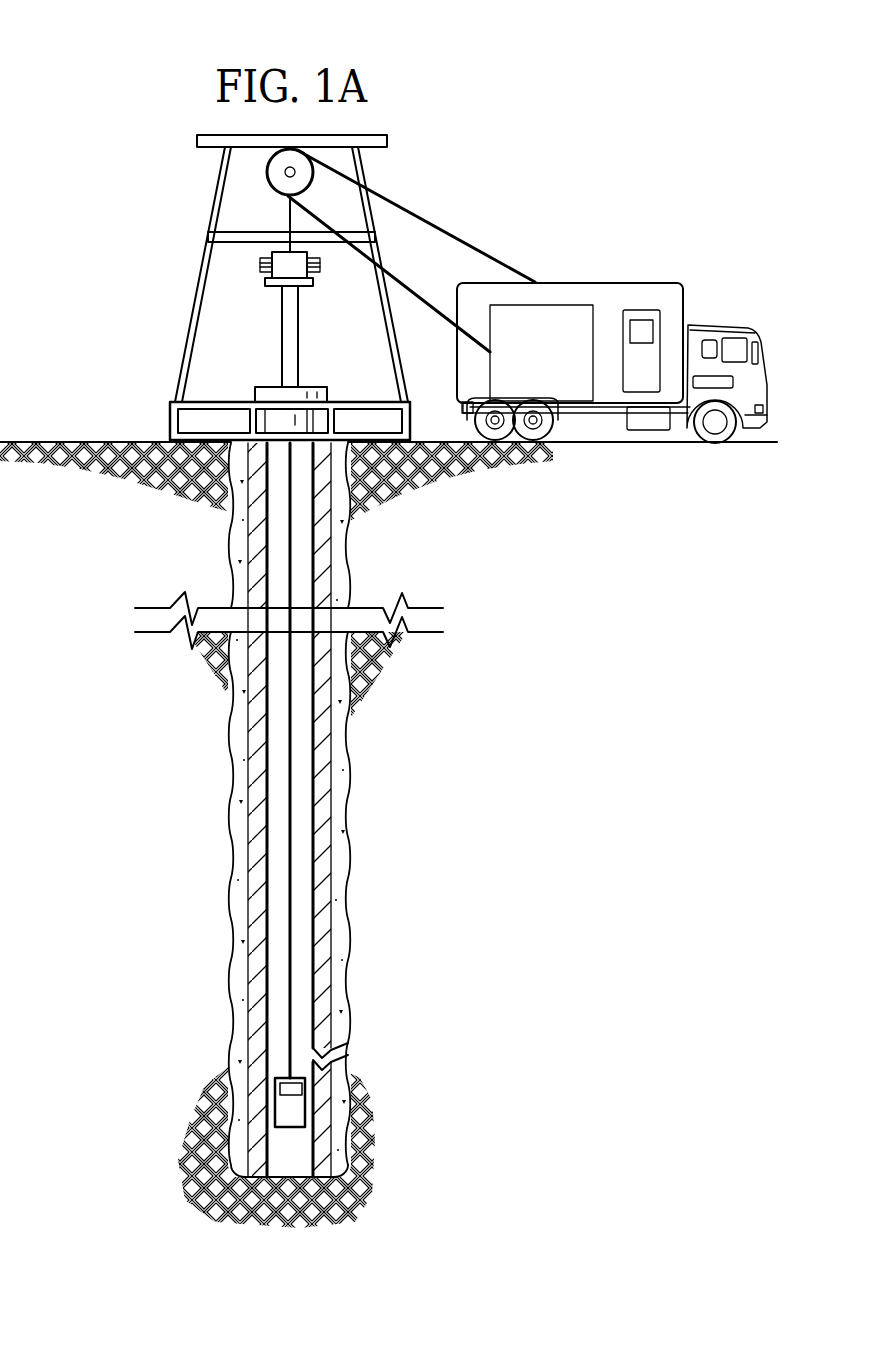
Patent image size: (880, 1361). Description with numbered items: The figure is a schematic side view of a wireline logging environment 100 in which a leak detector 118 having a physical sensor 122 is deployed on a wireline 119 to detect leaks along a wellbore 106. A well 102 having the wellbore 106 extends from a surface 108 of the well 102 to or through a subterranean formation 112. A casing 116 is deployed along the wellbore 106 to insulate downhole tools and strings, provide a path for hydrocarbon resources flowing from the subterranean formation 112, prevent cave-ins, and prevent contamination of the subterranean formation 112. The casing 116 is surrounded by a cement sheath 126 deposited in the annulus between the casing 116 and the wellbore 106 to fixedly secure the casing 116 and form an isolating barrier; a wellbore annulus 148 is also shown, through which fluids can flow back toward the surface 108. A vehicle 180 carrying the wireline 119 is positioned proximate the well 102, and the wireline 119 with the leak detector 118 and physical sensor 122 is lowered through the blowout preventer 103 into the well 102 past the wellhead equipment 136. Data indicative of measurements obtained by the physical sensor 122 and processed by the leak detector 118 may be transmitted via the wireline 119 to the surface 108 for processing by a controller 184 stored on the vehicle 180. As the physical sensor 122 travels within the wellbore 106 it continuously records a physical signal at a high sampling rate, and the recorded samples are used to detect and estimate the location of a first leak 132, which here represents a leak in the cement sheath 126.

The wireline logging environment 100 is at (108, 100).
The well 102 is at (320, 375).
The blowout preventer 103 is at (282, 322).
The wellbore 106 is at (347, 800).
The surface 108 is at (83, 442).
The subterranean formation 112 is at (560, 729).
The casing 116 is at (325, 868).
The leak detector 118 is at (298, 1108).
The wireline 119 is at (287, 215).
The physical sensor 122 is at (285, 1090).
The cement sheath 126 is at (343, 748).
The first leak 132 is at (364, 1053).
The lubricator block 136 is at (267, 387).
The wellbore annulus 148 is at (275, 908).
The vehicle 180 is at (623, 283).
The controller 184 is at (558, 305).